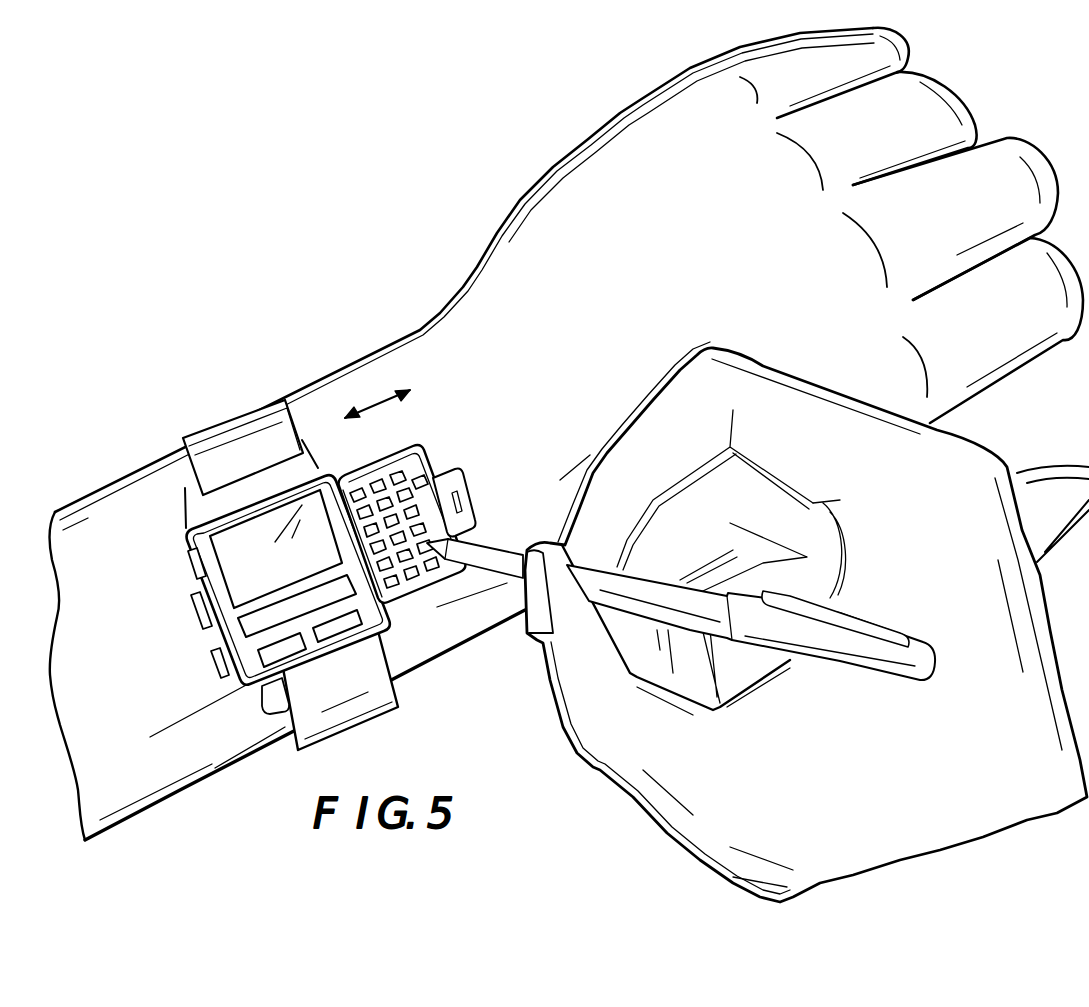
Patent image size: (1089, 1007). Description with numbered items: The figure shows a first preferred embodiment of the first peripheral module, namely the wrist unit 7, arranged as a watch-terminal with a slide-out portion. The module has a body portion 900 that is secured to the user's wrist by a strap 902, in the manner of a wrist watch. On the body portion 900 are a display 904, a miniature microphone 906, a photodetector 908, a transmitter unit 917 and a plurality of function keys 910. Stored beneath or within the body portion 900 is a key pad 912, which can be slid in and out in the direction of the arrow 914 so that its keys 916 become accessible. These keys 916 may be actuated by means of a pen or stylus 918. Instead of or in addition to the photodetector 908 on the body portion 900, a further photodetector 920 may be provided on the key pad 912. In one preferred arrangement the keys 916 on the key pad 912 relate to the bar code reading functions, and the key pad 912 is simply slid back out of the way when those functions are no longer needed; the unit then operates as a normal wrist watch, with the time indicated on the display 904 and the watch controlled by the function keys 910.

The wrist unit 7 is at (247, 400).
The body portion 900 is at (197, 613).
The wrist band 902 is at (340, 738).
The display 904 is at (243, 592).
The miniature microphone 906 is at (262, 625).
The photodetector 908 is at (345, 632).
The function keys 910 is at (180, 570).
The key pad 912 is at (424, 447).
The arrow 914 is at (372, 403).
The keys 916 is at (411, 573).
The transmitter unit 917 is at (286, 660).
The pen or stylus 918 is at (860, 670).
The photodetector 920 is at (443, 460).